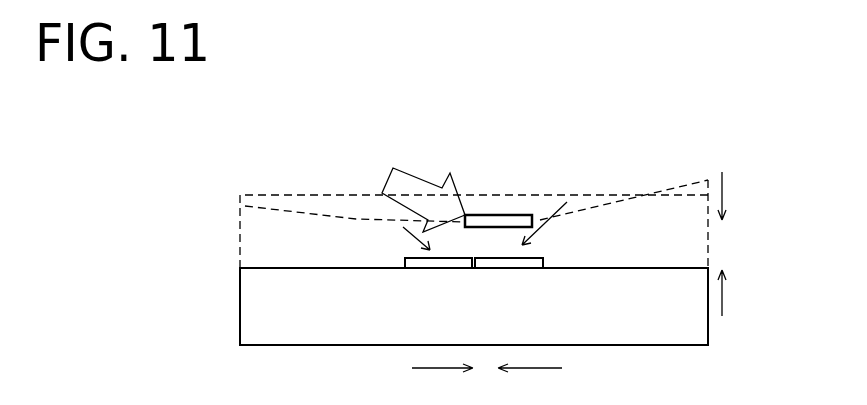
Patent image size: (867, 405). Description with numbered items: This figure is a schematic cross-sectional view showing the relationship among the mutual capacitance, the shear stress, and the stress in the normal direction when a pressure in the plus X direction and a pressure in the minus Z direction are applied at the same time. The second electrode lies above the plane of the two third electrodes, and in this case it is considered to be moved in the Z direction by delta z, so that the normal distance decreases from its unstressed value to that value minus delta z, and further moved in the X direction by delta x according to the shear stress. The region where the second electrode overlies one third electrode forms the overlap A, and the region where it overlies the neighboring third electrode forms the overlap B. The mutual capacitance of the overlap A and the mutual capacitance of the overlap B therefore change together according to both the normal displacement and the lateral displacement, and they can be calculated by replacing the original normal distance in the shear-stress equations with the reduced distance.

The overlap A is at (356, 221).
The overlap B is at (541, 216).